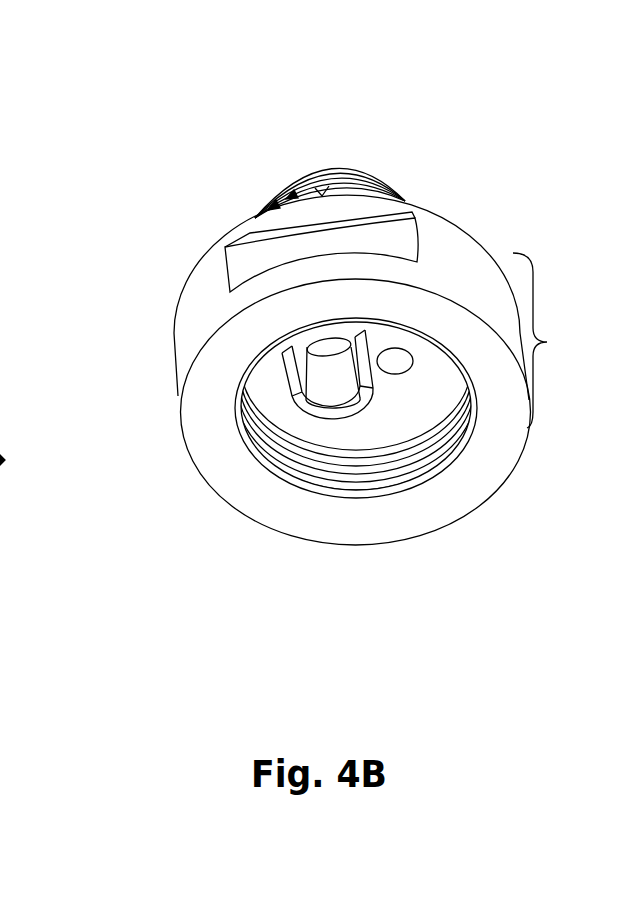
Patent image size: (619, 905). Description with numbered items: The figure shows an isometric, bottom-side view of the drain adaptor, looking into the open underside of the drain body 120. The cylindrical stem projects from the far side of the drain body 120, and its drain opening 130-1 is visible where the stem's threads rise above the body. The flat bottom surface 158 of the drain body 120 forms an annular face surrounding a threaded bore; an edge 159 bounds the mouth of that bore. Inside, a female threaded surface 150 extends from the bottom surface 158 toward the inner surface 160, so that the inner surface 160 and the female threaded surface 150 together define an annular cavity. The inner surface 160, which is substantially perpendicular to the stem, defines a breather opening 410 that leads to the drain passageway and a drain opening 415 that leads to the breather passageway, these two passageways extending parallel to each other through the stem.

The drain body 120 is at (385, 311).
The drain opening 130-1 is at (293, 197).
The bottom surface 158 is at (215, 405).
The bore inner edge 159 is at (252, 462).
The female threaded surface 150 is at (327, 473).
The inner surface 160 is at (400, 413).
The drain opening 415 is at (393, 362).
The breather opening 410 is at (322, 417).